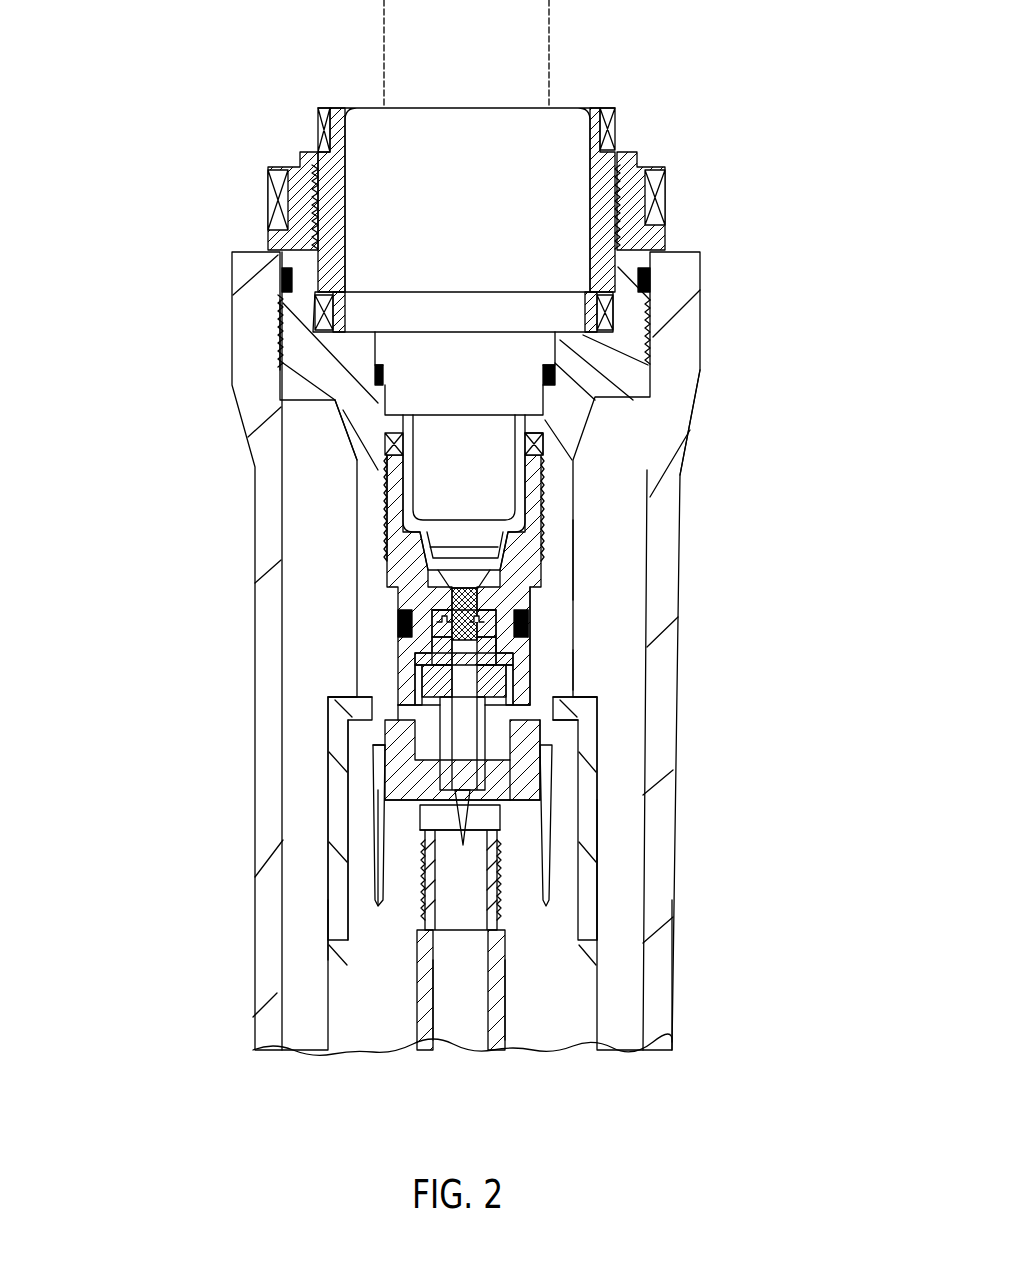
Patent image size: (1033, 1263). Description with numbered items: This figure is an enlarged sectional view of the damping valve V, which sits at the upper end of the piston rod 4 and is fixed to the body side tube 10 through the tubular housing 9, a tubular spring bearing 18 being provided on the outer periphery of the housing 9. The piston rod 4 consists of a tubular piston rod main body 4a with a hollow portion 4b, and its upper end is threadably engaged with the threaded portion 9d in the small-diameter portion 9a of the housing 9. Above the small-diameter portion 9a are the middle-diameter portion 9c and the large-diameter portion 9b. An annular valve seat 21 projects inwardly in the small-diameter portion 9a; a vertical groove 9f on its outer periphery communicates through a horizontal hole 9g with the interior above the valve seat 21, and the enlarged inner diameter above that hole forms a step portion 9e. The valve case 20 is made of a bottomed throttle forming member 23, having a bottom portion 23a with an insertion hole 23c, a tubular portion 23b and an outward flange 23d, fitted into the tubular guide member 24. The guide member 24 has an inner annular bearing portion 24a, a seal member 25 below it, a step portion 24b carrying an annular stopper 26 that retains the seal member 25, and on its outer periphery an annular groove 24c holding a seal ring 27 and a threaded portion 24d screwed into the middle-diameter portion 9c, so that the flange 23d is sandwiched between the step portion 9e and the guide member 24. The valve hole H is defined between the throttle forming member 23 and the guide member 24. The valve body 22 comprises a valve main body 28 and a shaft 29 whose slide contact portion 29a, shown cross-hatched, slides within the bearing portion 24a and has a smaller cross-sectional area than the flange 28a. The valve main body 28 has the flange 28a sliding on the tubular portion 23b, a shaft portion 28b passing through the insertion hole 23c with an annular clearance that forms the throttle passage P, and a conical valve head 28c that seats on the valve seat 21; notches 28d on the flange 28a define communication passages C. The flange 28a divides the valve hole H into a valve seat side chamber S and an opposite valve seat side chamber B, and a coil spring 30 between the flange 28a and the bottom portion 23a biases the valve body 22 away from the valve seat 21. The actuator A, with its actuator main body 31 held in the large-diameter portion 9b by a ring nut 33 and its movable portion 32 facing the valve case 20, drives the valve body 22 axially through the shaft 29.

The actuator A is at (560, 112).
The ring nut 33 is at (616, 128).
The actuator main body 31 is at (368, 240).
The housing 9 is at (660, 372).
The small-diameter portion 9a is at (600, 868).
The large-diameter portion 9b is at (290, 352).
The middle-diameter portion 9c is at (345, 508).
The threaded portion 9d is at (345, 922).
The step portion 9e is at (375, 762).
The vertical groove 9f is at (555, 850).
The horizontal hole 9g is at (375, 792).
The body side tube 10 is at (680, 472).
The spring bearing 18 is at (600, 975).
The movable portion 32 is at (490, 465).
The guide member 24 is at (548, 498).
The bearing portion 24a is at (560, 522).
The step portion 24b is at (395, 622).
The annular groove 24c is at (548, 600).
The threaded portion 24d is at (385, 490).
The valve case 20 is at (585, 558).
The seal member 25 is at (418, 575).
The stopper 26 is at (540, 620).
The seal ring 27 is at (450, 598).
The shaft 29 is at (432, 668).
The slide contact portion 29a is at (430, 602).
The valve body 22 is at (488, 682).
The throttle forming member 23 is at (200, 808).
The bottom portion 23a is at (505, 805).
The tubular portion 23b is at (425, 660).
The insertion hole 23c is at (430, 782).
The flange 23d is at (545, 760).
The valve main body 28 is at (345, 870).
The flange 28a is at (345, 705).
The shaft portion 28b is at (565, 722).
The valve head 28c is at (385, 860).
The notches 28d is at (590, 700).
The coil spring 30 is at (380, 790).
The valve seat 21 is at (500, 910).
The piston rod 4 is at (508, 995).
The piston rod main body 4a is at (503, 1010).
The hollow portion 4b is at (440, 995).
The opposite valve seat side chamber B is at (520, 640).
The communication passages C is at (425, 735).
The valve hole H is at (440, 702).
The valve seat side chamber S is at (520, 778).
The damping valve V is at (578, 668).
The throttle passage P is at (495, 800).